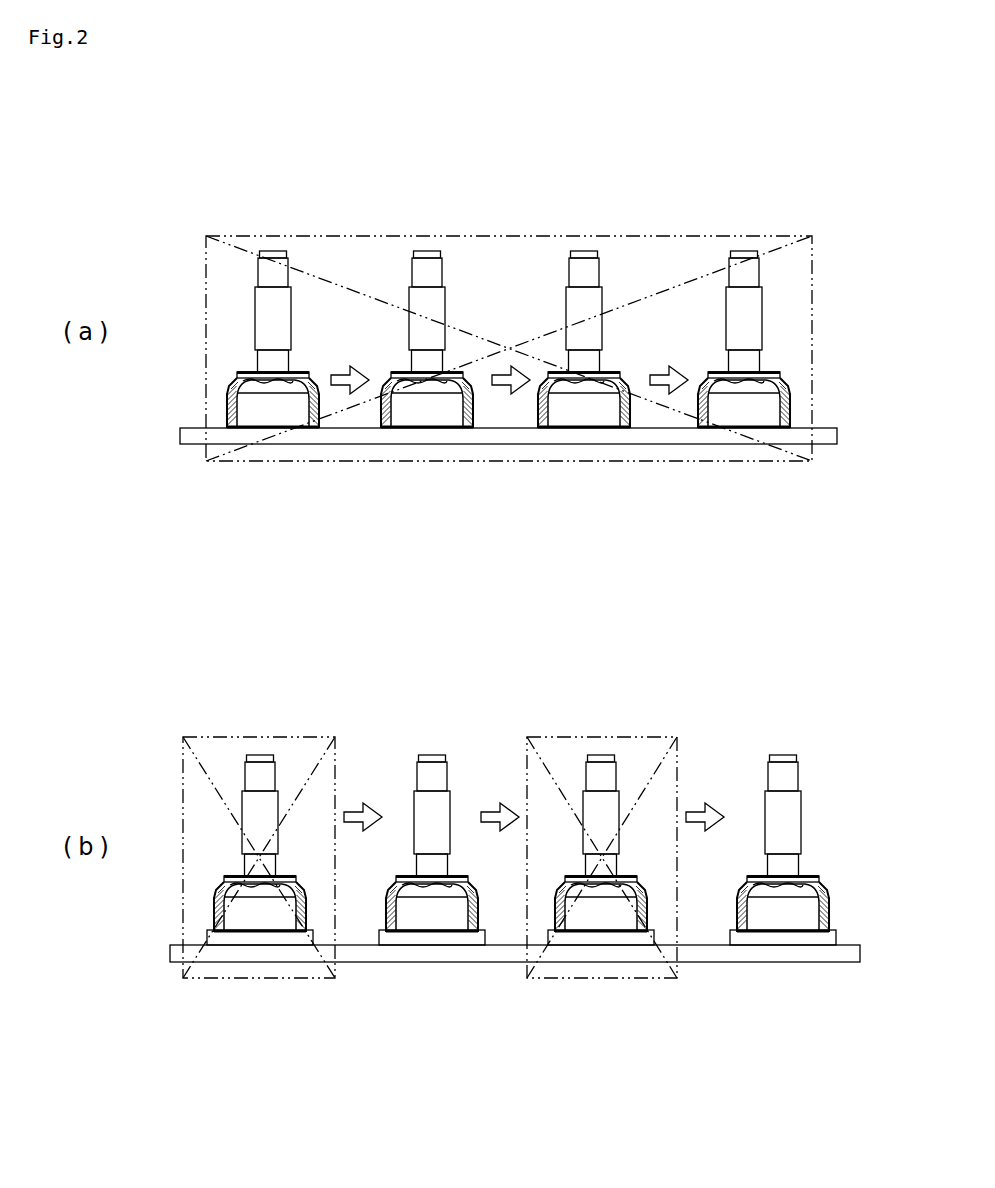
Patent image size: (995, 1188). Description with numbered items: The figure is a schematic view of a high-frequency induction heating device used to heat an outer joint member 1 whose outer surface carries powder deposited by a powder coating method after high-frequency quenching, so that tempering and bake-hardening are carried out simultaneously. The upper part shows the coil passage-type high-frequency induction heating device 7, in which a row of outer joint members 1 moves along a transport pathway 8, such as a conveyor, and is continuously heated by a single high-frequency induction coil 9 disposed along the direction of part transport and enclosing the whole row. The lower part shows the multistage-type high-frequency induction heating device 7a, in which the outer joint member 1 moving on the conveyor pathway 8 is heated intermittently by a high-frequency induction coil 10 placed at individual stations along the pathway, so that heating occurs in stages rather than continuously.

The outer joint member 1 is at (300, 259).
The coil passage-type high-frequency induction heating device 7 is at (543, 188).
The multistage-type high-frequency induction heating device 7a is at (620, 689).
The transport pathway 8 is at (368, 437).
The high-frequency induction coil 9 is at (695, 235).
The high-frequency induction coil 10 is at (222, 737).